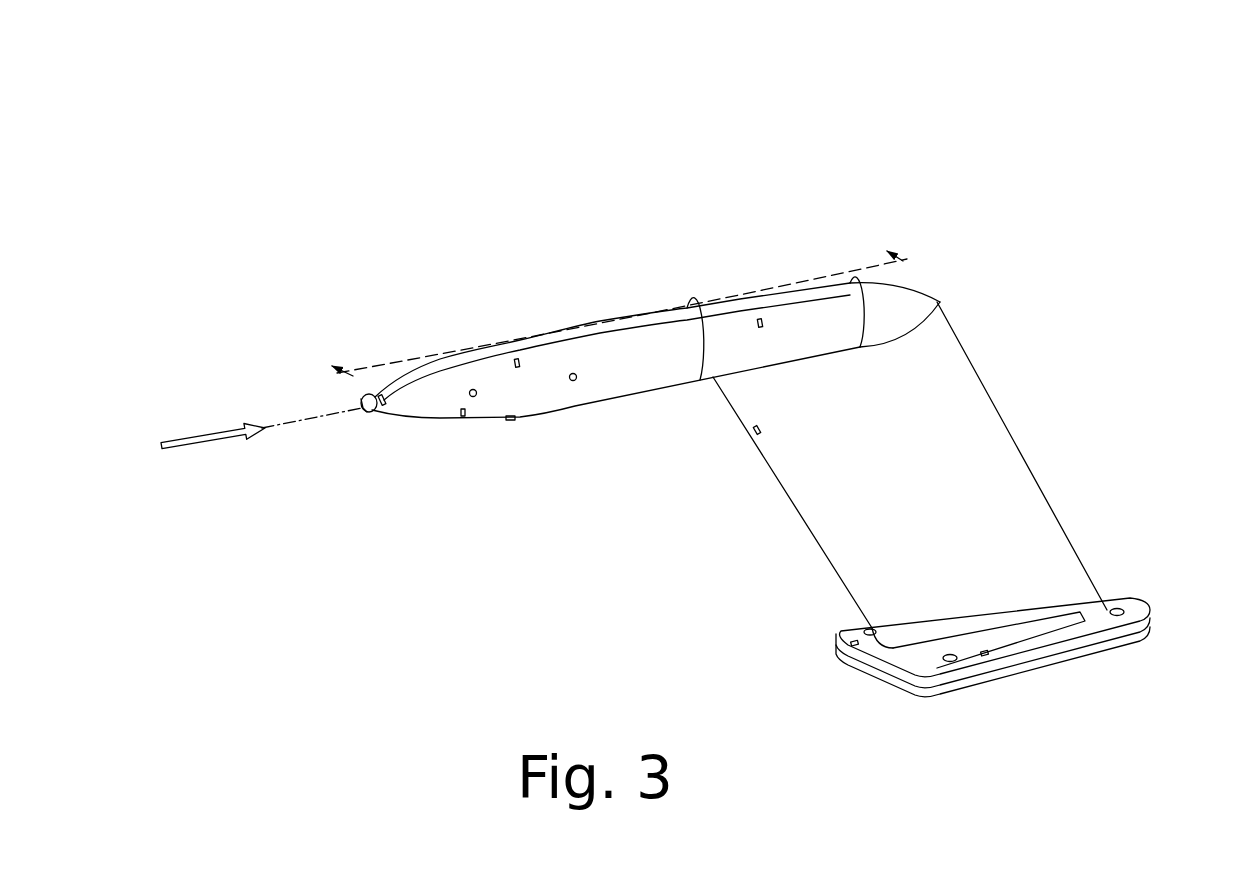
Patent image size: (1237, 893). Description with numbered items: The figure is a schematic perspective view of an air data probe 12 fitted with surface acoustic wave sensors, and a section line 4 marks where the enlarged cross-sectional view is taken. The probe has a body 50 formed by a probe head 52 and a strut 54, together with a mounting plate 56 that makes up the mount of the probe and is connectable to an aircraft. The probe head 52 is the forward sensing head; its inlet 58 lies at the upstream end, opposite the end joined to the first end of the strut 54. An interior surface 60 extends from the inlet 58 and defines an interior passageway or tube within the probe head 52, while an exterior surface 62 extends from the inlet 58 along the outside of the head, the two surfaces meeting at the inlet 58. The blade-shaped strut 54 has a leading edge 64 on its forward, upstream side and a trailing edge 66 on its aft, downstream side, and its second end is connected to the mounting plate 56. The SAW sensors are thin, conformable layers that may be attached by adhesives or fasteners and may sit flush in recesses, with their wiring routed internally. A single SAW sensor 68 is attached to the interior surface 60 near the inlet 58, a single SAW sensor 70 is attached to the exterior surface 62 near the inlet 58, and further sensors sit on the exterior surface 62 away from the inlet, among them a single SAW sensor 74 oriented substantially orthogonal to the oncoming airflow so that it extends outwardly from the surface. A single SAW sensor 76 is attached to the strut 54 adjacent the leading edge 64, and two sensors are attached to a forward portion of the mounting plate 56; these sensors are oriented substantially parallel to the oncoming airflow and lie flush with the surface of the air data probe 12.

The air data probe 12 is at (532, 203).
The section line 4- 4 is at (903, 260).
The body 50 is at (665, 487).
The probe head 52 is at (496, 399).
The strut 54 is at (922, 475).
The mounting plate 56 is at (965, 676).
The inlet 58 is at (358, 405).
The interior surface 60 is at (366, 398).
The exterior surface 62 is at (625, 362).
The leading edge 64 is at (802, 518).
The trailing edge 66 is at (987, 375).
The SAW sensors 68 is at (363, 408).
The SAW sensor 70 is at (381, 410).
The SAW sensor 74 is at (511, 423).
The SAW sensor 76 is at (755, 433).